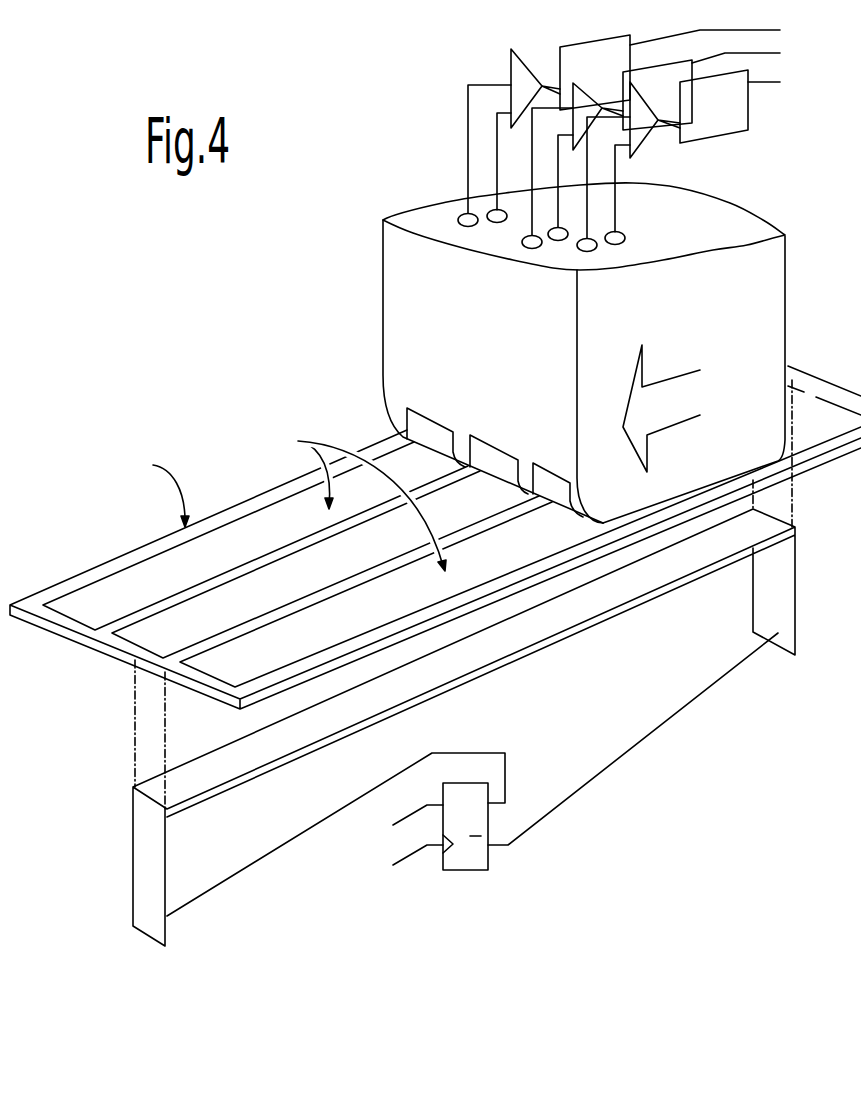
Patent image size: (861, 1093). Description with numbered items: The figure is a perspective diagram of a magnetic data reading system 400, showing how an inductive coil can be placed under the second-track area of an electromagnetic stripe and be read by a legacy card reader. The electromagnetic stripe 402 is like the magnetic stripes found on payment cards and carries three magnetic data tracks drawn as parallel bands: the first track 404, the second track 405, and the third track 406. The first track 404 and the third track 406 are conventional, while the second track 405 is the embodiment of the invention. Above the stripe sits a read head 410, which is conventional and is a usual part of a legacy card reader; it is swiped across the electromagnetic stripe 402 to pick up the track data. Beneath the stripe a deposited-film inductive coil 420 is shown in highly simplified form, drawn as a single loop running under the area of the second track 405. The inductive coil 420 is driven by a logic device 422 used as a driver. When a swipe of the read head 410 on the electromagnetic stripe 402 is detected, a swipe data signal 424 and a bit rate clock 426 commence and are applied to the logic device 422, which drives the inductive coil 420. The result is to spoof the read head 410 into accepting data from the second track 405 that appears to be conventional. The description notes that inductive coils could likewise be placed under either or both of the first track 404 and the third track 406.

The magnetic data reading system 400 is at (385, 135).
The electromagnetic stripe 402 is at (94, 640).
The track-1 404 is at (301, 528).
The track-2 405 is at (364, 562).
The track-3 406 is at (417, 597).
The read head 410 is at (393, 303).
The deposited-film inductive coil 420 is at (548, 642).
The logic device 422 is at (466, 866).
The swipe data signal 424 is at (432, 801).
The bit rate clock 426 is at (433, 850).